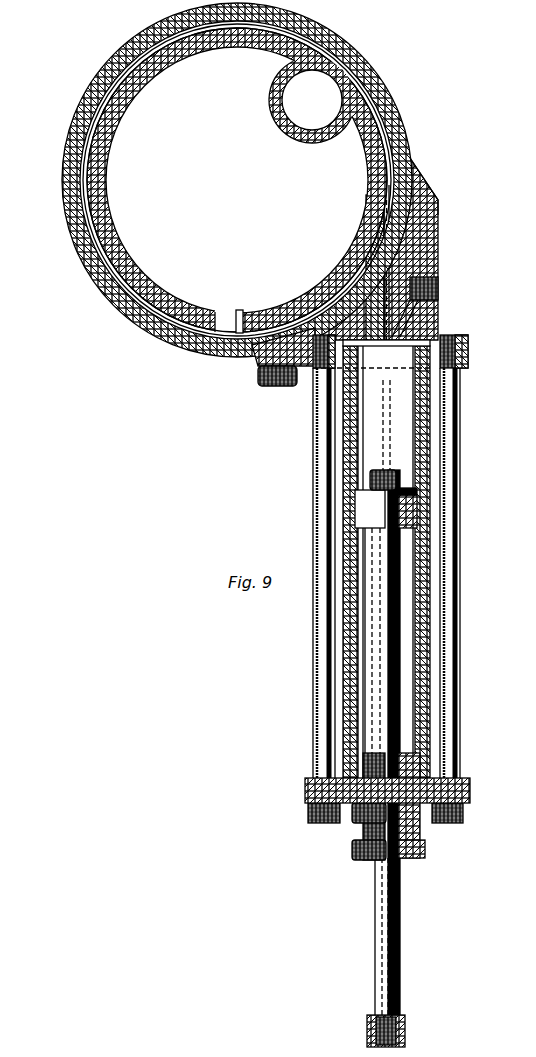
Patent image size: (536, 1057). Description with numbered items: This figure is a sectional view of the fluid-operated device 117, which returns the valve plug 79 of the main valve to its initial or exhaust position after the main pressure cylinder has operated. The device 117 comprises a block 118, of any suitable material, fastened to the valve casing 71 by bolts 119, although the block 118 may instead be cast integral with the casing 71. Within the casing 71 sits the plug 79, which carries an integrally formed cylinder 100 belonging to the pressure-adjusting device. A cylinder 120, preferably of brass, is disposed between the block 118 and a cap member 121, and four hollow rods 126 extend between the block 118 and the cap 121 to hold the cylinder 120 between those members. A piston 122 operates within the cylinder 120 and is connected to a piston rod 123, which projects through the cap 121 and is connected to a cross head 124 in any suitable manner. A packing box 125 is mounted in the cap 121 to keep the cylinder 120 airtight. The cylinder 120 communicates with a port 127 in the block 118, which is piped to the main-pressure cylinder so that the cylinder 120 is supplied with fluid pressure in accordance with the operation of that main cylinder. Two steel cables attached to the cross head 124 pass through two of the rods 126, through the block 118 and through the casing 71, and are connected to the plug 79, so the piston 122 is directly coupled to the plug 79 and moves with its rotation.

The valve casing 71 is at (350, 50).
The valve plug 79 is at (183, 314).
The cylinder 100 is at (287, 128).
The fluid-operated device 117 is at (294, 481).
The block 118 is at (418, 182).
The bolts 119 is at (440, 200).
The cylinder 120 is at (430, 420).
The cap member 121 is at (462, 788).
The piston 122 is at (361, 488).
The piston rod 123 is at (400, 662).
The cross head 124 is at (405, 1022).
The packing box 125 is at (420, 818).
The hollow rods 126 is at (318, 487).
The port 127 is at (440, 291).